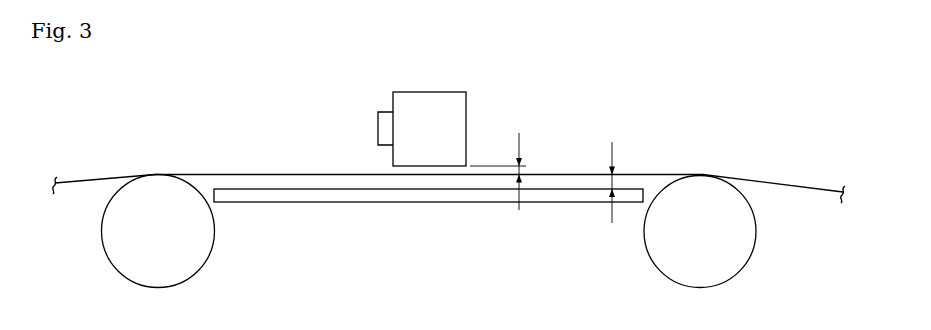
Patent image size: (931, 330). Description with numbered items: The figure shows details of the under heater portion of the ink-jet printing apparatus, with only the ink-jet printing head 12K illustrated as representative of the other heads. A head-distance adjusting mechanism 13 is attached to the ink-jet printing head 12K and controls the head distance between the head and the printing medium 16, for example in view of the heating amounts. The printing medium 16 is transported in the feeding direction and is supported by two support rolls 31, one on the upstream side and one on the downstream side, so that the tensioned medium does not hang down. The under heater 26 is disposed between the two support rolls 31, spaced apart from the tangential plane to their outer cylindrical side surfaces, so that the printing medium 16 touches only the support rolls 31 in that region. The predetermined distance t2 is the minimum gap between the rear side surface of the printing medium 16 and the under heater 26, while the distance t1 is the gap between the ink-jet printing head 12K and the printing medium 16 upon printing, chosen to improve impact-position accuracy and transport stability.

The ink-jet printing head 12K is at (430, 98).
The head-distance adjusting mechanism 13 is at (378, 128).
The printing medium 16 is at (780, 185).
The under heater 26 is at (366, 200).
The support roll 31 is at (200, 267).
The distance between the ink-jet printing head and the printing medium t1 is at (521, 171).
The predetermined distance t2 is at (614, 183).